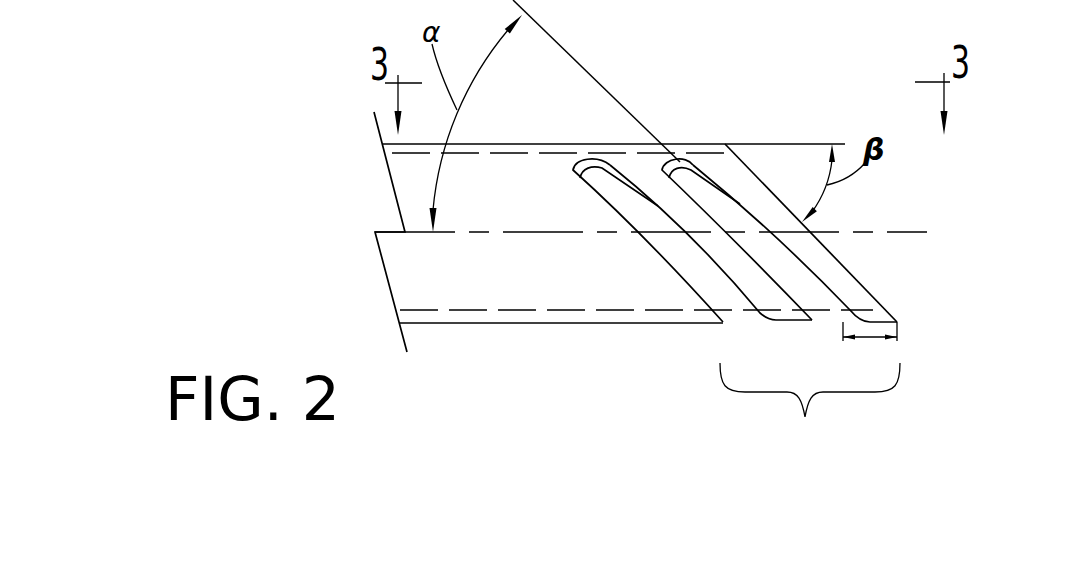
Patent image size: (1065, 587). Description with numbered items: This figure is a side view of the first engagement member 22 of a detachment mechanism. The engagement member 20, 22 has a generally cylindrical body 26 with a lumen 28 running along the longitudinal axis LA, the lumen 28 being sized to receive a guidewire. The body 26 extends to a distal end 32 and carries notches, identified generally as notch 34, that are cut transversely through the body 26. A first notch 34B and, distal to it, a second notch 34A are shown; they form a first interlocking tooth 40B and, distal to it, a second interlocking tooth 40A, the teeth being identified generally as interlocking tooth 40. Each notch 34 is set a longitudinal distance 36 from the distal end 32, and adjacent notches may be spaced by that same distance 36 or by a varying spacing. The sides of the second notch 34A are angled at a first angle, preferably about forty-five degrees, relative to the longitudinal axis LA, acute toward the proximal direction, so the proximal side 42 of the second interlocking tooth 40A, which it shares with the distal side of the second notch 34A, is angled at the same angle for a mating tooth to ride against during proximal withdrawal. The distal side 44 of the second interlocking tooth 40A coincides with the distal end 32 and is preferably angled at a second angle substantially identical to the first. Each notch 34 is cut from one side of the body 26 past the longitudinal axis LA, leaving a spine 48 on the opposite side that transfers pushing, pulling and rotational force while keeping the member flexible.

The medical device 20 is at (398, 0).
The first engagement member 22 is at (702, 84).
The body 26 is at (453, 173).
The lumen 28 is at (830, 212).
The distal end 32 is at (912, 309).
The notch 34 is at (810, 406).
The second notch 34A is at (828, 326).
The first notch 34B is at (736, 311).
The longitudinal distance 36 is at (870, 346).
The interlocking tooth 40 is at (750, 115).
The second interlocking tooth 40A is at (770, 218).
The first interlocking tooth 40B is at (676, 205).
The proximal side 42 is at (820, 283).
The distal side 44 is at (880, 300).
The spine 48 is at (629, 143).
The longitudinal axis LA is at (900, 232).